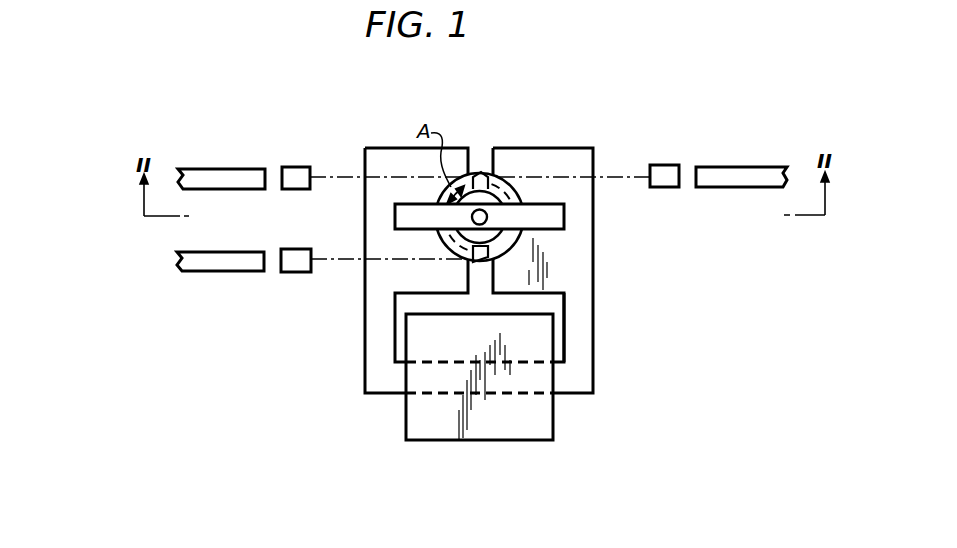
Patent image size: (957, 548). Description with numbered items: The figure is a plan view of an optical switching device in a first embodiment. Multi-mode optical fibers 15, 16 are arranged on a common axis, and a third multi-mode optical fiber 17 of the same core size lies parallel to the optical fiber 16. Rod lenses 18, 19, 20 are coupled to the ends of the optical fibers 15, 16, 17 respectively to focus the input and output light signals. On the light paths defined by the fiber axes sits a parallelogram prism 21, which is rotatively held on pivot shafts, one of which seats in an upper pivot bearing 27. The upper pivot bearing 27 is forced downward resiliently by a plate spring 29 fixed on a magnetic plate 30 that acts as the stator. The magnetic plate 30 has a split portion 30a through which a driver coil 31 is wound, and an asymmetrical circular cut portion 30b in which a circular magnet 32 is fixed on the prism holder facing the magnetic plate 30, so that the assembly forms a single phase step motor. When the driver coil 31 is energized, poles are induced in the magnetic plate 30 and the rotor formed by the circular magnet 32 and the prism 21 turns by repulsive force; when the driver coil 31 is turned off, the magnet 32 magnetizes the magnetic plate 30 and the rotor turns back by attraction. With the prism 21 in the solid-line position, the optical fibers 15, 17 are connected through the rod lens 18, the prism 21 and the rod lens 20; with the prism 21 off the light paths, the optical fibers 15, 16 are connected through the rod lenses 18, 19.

The multi-mode optical fiber 15 is at (740, 173).
The multi-mode optical fiber 16 is at (220, 176).
The multi-mode optical fiber 17 is at (200, 263).
The rod lens 18 is at (660, 171).
The rod lens 19 is at (293, 177).
The rod lens 20 is at (297, 263).
The parallelogram prism 21 is at (483, 186).
The upper pivot bearing 27 is at (487, 219).
The plate spring 29 is at (408, 214).
The magnetic plate (stator) 30 is at (580, 225).
The split portion 30a is at (556, 306).
The circular cut portion 30b is at (462, 240).
The driver coil 31 is at (547, 412).
The circular magnet 32 is at (512, 192).